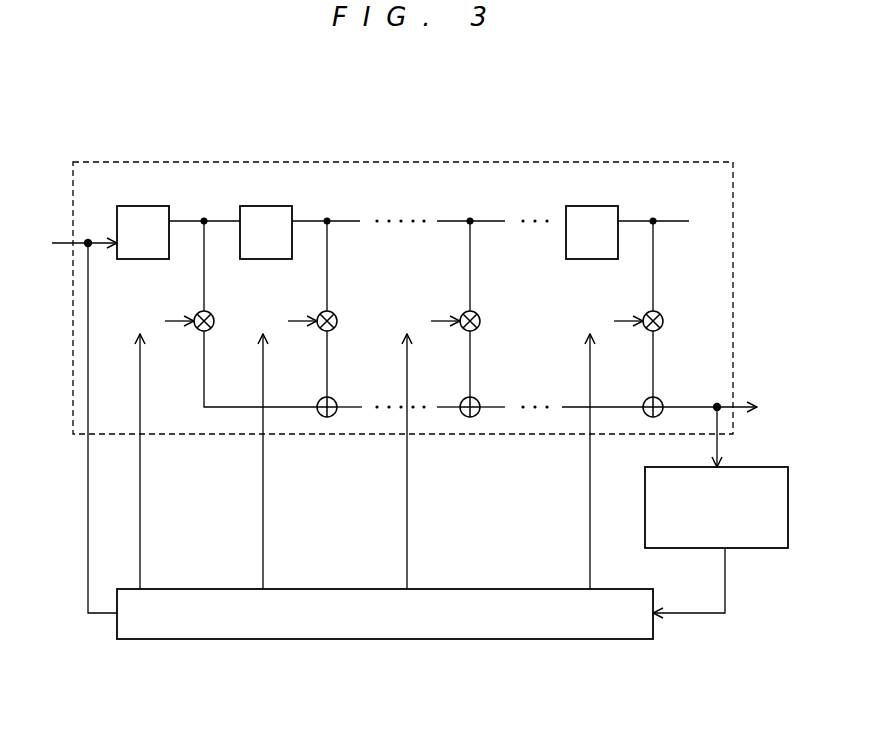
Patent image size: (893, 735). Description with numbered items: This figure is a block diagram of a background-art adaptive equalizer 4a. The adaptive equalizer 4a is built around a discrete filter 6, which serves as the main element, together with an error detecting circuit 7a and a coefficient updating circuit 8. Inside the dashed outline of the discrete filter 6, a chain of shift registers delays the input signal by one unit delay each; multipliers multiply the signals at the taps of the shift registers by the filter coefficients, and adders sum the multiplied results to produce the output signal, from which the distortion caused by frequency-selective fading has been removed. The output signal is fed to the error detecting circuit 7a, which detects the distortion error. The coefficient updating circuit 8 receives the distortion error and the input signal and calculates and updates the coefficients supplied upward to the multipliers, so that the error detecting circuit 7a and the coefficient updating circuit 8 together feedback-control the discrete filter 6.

The adaptive equalizer 4a is at (713, 129).
The discrete filter 6 is at (527, 160).
The error detecting circuit 7a is at (772, 548).
The coefficient updating circuit 8 is at (527, 589).